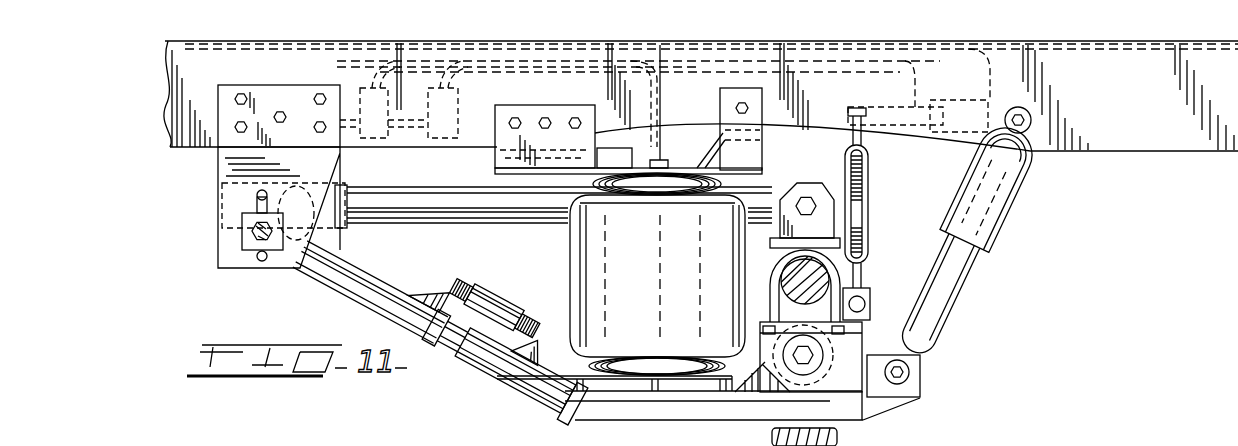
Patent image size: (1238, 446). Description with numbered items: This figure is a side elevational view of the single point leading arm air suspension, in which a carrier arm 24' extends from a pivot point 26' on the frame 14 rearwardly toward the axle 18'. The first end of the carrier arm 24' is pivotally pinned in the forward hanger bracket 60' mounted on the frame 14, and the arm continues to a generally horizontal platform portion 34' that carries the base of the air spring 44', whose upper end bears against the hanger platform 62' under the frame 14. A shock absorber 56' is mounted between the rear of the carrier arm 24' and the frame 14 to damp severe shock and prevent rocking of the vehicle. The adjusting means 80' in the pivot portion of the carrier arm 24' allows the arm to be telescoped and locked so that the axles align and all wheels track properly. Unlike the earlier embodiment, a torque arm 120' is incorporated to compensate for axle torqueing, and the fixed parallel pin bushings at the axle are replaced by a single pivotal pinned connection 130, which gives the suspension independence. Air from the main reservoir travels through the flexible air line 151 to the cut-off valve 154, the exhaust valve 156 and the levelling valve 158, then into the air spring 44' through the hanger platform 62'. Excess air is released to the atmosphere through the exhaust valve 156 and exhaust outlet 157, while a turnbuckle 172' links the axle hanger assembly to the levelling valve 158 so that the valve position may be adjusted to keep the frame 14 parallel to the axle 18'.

The frame 14 is at (190, 150).
The axle 18' is at (839, 252).
The carrier arm 24' is at (438, 331).
The pivot point 26' is at (221, 235).
The platform portion 34' is at (708, 400).
The air spring 44' is at (625, 274).
The shock absorber 56' is at (969, 235).
The forward hanger bracket 60' is at (252, 207).
The hanger platform 62' is at (602, 111).
The adjusting means 80' is at (482, 302).
The torque arm 120' is at (553, 192).
The pivotal pinned connection 130 is at (806, 362).
The air line 151 is at (448, 44).
The cut-off valve 154 is at (458, 103).
The exhaust valve 156 is at (374, 86).
The exhaust outlet 157 is at (353, 105).
The levelling valve 158 is at (967, 100).
The turnbuckle 172' is at (887, 214).